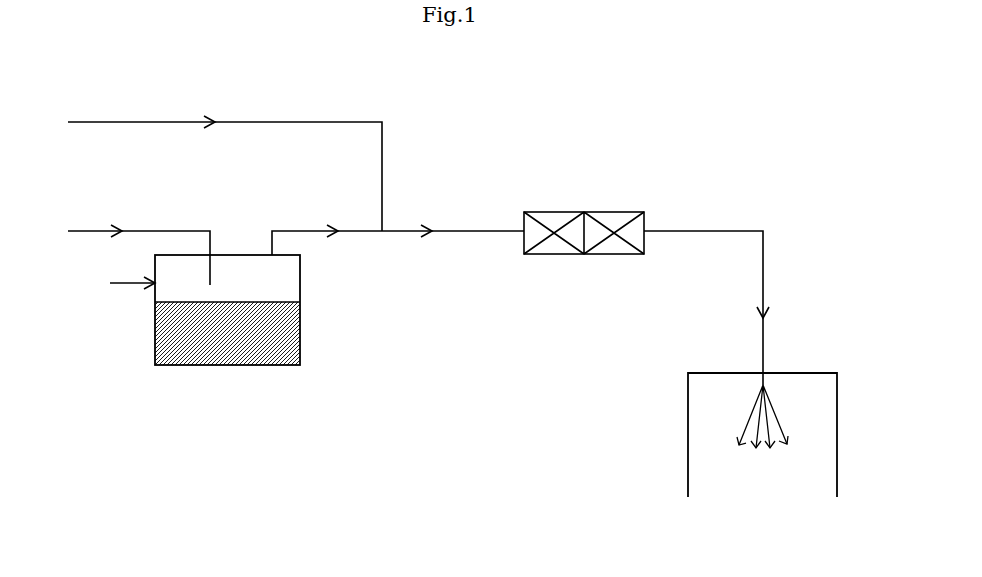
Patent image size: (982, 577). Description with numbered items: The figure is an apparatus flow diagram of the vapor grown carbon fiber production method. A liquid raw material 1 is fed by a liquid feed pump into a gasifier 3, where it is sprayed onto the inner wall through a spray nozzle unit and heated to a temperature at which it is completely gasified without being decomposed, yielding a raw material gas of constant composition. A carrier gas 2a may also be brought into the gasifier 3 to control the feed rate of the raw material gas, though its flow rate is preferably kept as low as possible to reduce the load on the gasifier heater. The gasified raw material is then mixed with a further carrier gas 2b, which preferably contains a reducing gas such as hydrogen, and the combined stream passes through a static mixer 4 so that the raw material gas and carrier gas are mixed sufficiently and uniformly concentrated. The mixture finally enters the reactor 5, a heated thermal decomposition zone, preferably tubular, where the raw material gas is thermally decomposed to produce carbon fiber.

The liquid raw material 1 is at (130, 252).
The carrier gas 2a is at (115, 284).
The carrier gas 2b is at (210, 171).
The gasifier 3 is at (280, 283).
The static mixer 4 is at (554, 213).
The reactor 5 is at (792, 387).